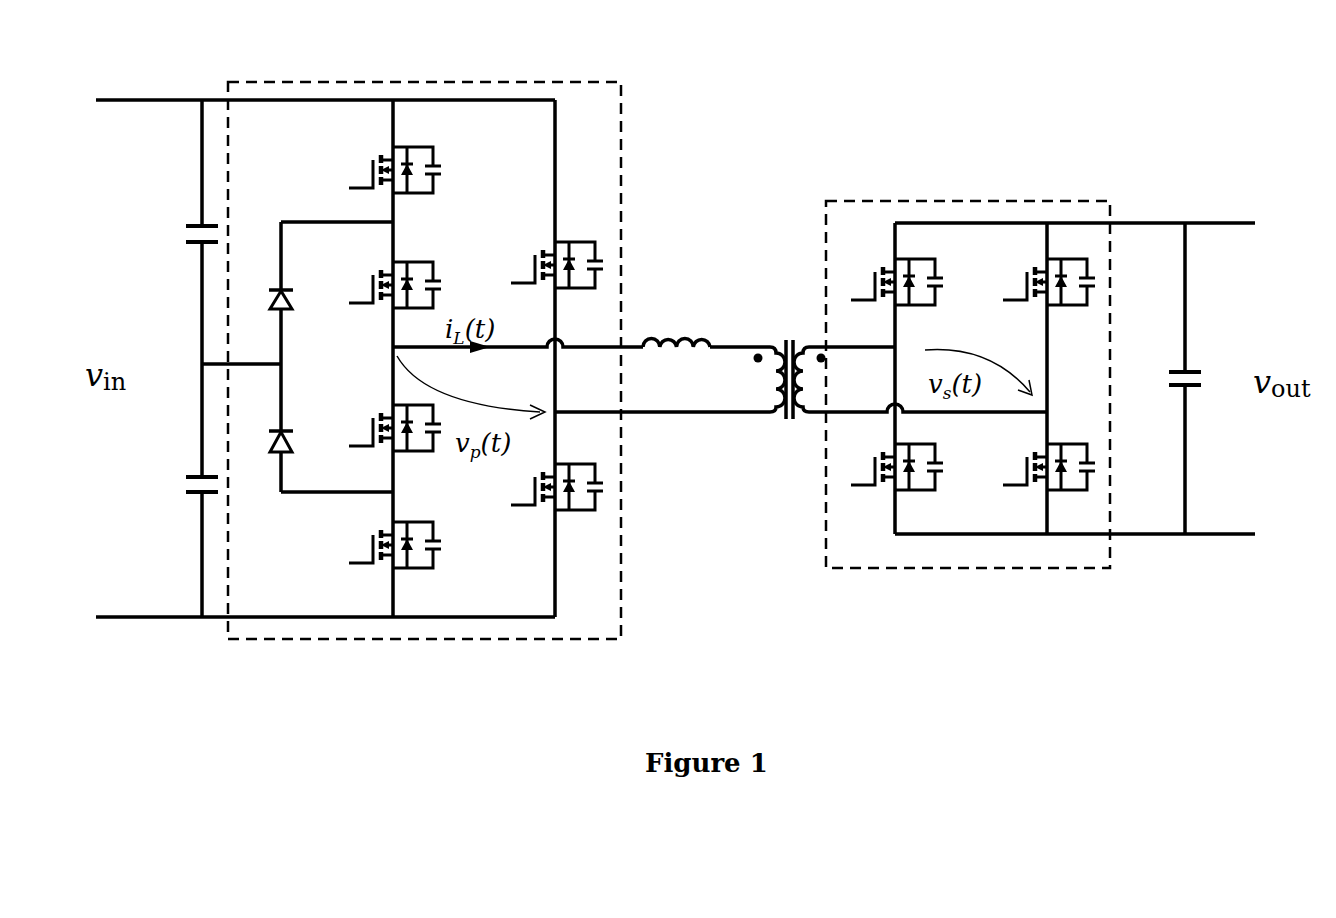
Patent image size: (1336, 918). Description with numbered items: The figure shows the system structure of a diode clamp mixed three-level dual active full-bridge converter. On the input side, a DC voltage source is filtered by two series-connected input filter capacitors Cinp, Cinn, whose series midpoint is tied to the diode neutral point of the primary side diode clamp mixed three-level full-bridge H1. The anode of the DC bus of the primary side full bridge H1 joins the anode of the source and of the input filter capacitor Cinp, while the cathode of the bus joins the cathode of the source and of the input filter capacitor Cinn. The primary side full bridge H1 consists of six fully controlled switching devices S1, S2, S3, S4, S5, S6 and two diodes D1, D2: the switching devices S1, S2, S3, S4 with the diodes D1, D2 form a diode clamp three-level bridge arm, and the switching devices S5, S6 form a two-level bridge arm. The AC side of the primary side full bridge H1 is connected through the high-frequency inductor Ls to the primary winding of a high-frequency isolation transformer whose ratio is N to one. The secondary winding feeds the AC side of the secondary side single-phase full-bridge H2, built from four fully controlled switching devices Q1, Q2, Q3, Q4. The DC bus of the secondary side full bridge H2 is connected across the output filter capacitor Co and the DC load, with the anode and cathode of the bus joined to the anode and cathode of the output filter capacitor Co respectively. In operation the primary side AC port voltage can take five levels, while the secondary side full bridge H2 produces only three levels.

The primary side diode clamp mixed three-level full-bridge H1 is at (424, 340).
The secondary side single-phase full-bridge H2 is at (968, 365).
The fully controlled switching device S1 is at (384, 170).
The fully controlled switching device S2 is at (384, 285).
The fully controlled switching device S3 is at (384, 428).
The fully controlled switching device S4 is at (384, 545).
The fully controlled switching device S5 is at (546, 265).
The fully controlled switching device S6 is at (546, 487).
The fully controlled switching device Q1 is at (884, 282).
The fully controlled switching device Q2 is at (884, 467).
The fully controlled switching device Q3 is at (1035, 282).
The fully controlled switching device Q4 is at (1035, 467).
The diode D1 is at (262, 301).
The diode D2 is at (262, 445).
The input filter capacitor Cinp is at (169, 238).
The input filter capacitor Cinn is at (169, 488).
The output filter capacitor Co is at (1164, 381).
The high-frequency inductor Ls is at (676, 326).
The transformer ratio N is at (781, 442).